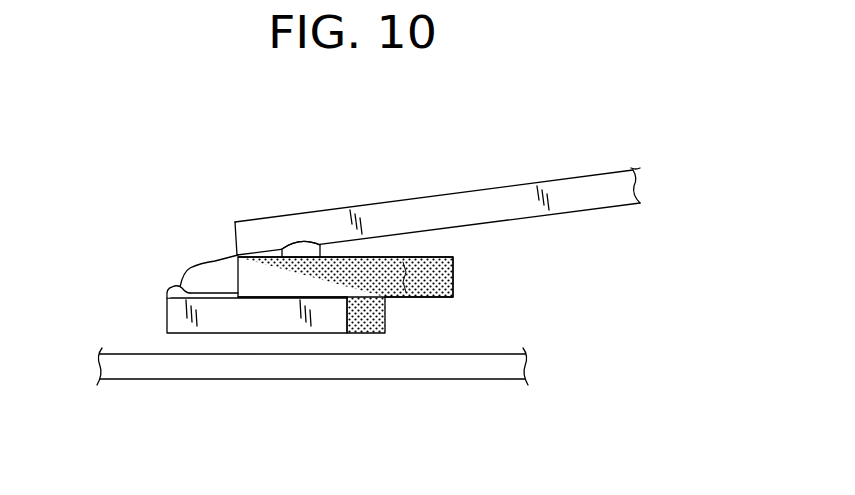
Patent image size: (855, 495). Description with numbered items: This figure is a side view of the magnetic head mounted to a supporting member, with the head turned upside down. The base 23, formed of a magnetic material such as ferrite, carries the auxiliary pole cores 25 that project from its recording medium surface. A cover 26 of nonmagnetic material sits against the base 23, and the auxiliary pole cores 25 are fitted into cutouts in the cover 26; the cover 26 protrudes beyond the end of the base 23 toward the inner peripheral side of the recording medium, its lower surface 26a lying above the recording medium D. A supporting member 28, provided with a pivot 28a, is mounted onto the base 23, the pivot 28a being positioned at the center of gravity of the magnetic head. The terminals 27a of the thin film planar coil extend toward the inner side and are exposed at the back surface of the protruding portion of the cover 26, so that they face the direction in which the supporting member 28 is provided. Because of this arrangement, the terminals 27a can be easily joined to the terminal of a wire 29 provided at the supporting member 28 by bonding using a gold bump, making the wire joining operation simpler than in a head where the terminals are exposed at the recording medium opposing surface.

The base 23 is at (453, 275).
The auxiliary pole core 25 is at (370, 315).
The cover 26 is at (177, 318).
The lower surface of lead 26a is at (267, 334).
The terminal 27a is at (175, 292).
The supporting member 28 is at (420, 208).
The pivot 28a is at (308, 247).
The wire 29 is at (203, 267).
The substrate/stage D is at (423, 363).